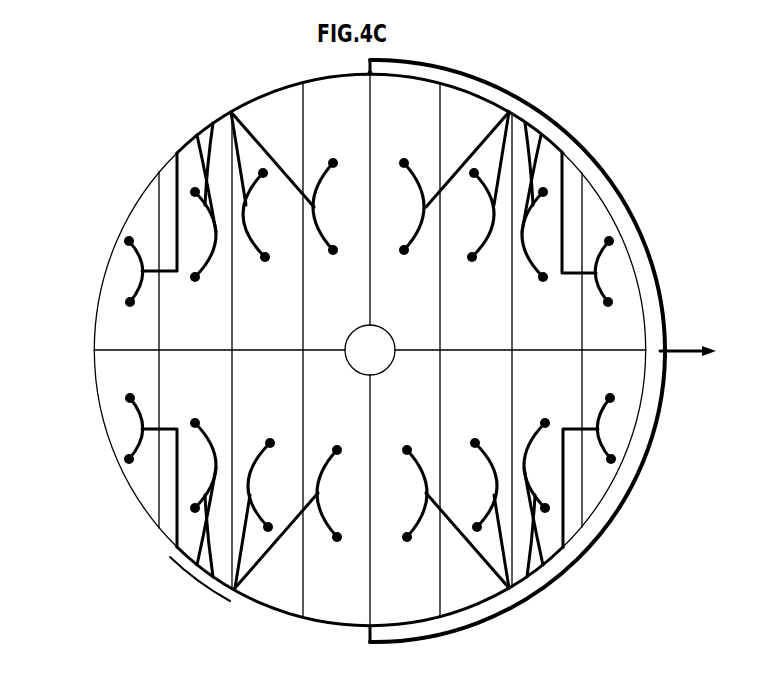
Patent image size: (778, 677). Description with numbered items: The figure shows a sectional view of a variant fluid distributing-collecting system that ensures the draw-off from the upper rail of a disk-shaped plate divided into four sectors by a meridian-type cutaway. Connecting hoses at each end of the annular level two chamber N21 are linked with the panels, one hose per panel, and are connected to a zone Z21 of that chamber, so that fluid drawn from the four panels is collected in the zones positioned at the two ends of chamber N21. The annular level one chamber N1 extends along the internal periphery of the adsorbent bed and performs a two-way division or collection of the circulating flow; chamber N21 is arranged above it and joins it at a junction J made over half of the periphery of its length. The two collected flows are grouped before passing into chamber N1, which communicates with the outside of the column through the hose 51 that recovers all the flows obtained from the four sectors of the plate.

The annular level 2 chamber N21 is at (540, 125).
The annular level 1 chamber N1 is at (612, 185).
The hose 51 is at (681, 350).
The zone of annular chamber Z21 is at (197, 580).
The junction J is at (367, 635).